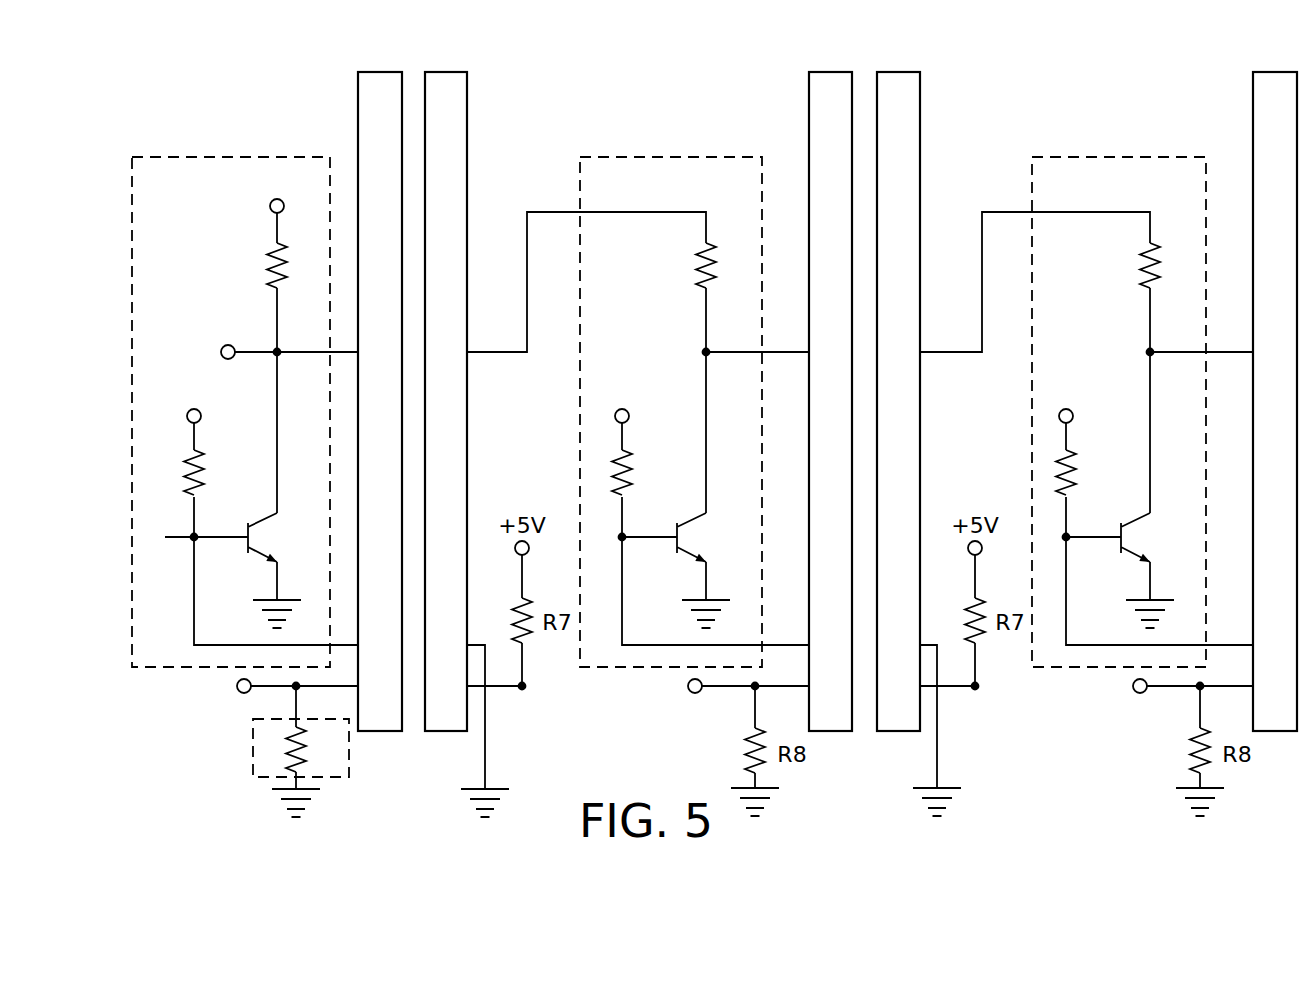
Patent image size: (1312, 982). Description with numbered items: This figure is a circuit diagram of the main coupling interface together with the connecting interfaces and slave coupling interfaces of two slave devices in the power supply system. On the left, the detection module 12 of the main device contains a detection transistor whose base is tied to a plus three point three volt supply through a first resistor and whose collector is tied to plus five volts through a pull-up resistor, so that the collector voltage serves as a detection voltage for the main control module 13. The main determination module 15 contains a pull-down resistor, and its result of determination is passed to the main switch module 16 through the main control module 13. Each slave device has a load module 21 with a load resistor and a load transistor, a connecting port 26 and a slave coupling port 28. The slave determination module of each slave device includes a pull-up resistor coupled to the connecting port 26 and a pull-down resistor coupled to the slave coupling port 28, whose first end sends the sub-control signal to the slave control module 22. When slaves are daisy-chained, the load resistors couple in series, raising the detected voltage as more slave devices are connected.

The detection module 12 is at (210, 157).
The main control module 13 is at (225, 345).
The main determination module 15 is at (349, 755).
The main switch module 16 is at (378, 72).
The load module 21 is at (650, 157).
The slave control module 22 is at (690, 692).
The connecting port 26 is at (445, 72).
The slave coupling port 28 is at (830, 72).